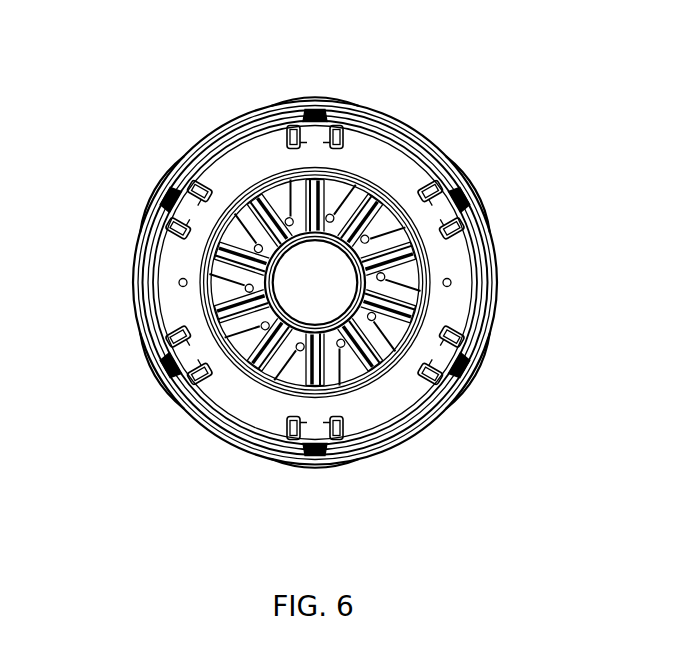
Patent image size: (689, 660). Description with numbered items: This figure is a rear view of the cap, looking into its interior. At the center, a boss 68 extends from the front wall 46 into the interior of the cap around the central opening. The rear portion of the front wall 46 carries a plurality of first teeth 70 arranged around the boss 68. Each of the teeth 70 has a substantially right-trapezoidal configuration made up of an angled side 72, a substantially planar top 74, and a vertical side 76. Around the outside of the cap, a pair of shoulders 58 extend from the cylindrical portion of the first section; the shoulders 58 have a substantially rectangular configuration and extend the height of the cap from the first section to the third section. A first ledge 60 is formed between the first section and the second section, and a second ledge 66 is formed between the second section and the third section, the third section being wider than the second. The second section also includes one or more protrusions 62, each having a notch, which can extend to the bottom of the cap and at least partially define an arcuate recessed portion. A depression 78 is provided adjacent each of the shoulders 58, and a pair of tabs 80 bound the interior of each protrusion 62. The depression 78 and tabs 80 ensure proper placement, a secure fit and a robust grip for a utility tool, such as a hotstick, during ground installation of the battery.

The front wall 46 is at (349, 175).
The shoulders 58 is at (170, 272).
The first ledge 60 is at (235, 388).
The protrusions 62 is at (470, 192).
The second ledge 66 is at (262, 428).
The boss 68 is at (352, 318).
The first teeth 70 is at (297, 186).
The angled side 72 is at (233, 222).
The planar top 74 is at (246, 226).
The vertical side 76 is at (283, 197).
The depression 78 is at (203, 291).
The tabs 80 is at (458, 232).